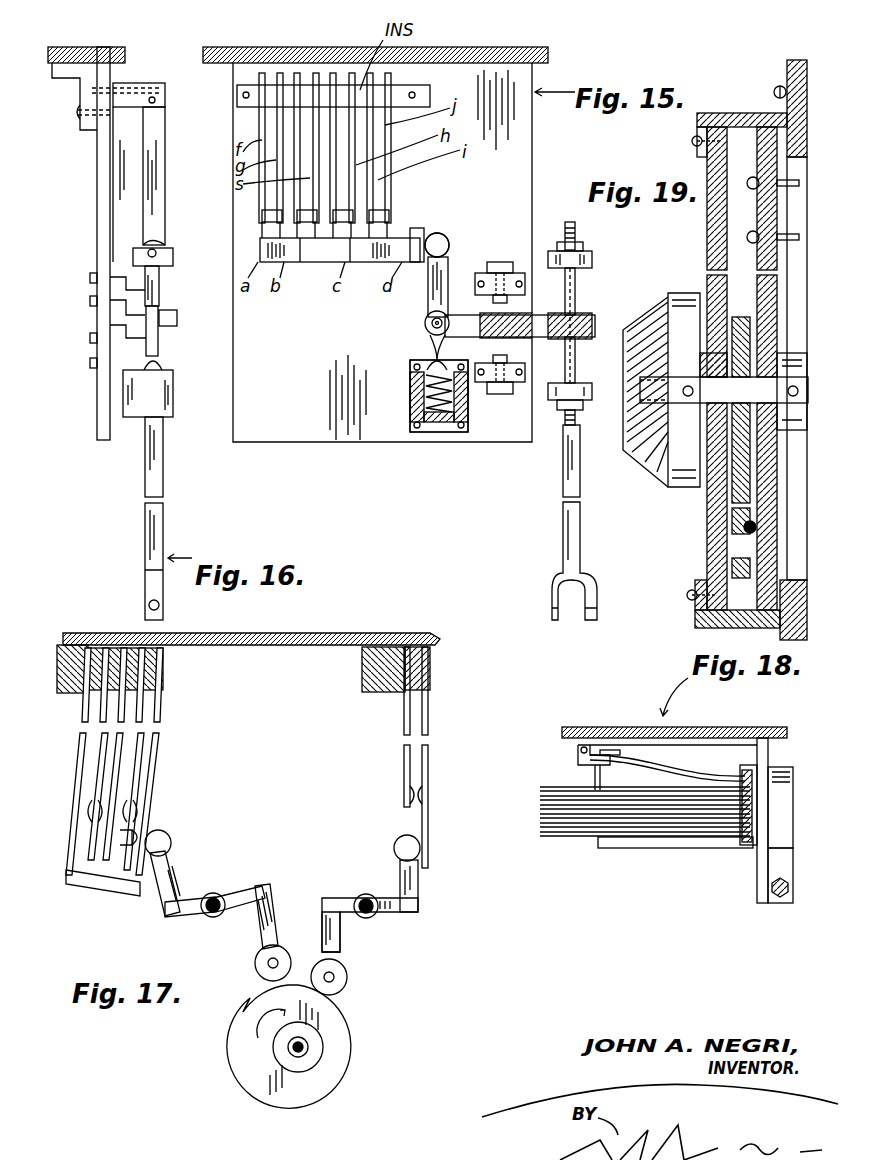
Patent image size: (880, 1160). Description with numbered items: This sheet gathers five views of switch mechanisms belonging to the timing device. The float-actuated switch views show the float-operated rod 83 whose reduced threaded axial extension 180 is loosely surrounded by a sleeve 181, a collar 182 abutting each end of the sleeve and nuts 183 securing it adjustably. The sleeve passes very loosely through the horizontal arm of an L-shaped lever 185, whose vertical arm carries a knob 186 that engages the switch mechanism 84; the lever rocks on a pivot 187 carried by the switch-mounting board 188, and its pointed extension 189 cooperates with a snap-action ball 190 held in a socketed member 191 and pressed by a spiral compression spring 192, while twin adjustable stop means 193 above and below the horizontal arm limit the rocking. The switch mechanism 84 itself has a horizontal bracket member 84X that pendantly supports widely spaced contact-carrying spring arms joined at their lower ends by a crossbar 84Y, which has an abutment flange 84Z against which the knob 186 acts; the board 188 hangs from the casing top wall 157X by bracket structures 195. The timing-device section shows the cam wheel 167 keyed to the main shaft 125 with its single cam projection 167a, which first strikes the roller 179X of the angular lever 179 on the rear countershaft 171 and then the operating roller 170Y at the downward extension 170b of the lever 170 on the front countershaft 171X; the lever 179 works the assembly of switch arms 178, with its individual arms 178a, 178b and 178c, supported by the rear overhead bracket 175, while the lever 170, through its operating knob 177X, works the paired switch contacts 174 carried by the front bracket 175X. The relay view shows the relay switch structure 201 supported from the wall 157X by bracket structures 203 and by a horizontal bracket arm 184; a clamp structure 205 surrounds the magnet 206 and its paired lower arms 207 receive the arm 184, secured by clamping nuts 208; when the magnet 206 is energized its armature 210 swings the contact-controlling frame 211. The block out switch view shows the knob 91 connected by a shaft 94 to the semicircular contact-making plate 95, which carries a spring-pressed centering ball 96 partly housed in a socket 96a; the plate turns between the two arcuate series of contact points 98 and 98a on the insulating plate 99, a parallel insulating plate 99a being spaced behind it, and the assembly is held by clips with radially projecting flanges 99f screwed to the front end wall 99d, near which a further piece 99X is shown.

In FIG. 16, the top wall 157X is at (115, 47).
In FIG. 17, the top wall 157X is at (358, 633).
In FIG. 18, the top wall 157X is at (760, 727).
In FIG. 16, the bracket structures 195 is at (72, 93).
In FIG. 16, the switch-mounting board 188 is at (103, 440).
In FIG. 15, the switch-mounting board 188 is at (340, 442).
In FIG. 16, the switch mechanism 84 is at (175, 190).
In FIG. 15, the switch mechanism 84 is at (427, 184).
In FIG. 16, the knob 186 is at (167, 244).
In FIG. 15, the knob 186 is at (449, 248).
In FIG. 16, the L-shaped lever 185 is at (174, 307).
In FIG. 15, the L-shaped lever 185 is at (422, 308).
In FIG. 16, the pointed extension 189 is at (160, 352).
In FIG. 15, the pointed extension 189 is at (443, 354).
In FIG. 16, the snap-action ball 190 is at (164, 368).
In FIG. 15, the snap-action ball 190 is at (425, 375).
In FIG. 16, the socketed member 191 is at (175, 400).
In FIG. 15, the socketed member 191 is at (455, 420).
In FIG. 16, the float-operated rod 83 is at (165, 496).
In FIG. 15, the float-operated rod 83 is at (563, 542).
In FIG. 15, the horizontal bracket member 84X is at (300, 85).
In FIG. 15, the crossbar 84Y is at (318, 272).
In FIG. 15, the abutment flange 84Z is at (430, 237).
In FIG. 15, the pivot 187 is at (425, 332).
In FIG. 15, the spiral compression spring 192 is at (425, 420).
In FIG. 15, the adjustable stop means 193 is at (499, 262).
In FIG. 15, the nuts 183 is at (562, 246).
In FIG. 15, the threaded axial extension 180 is at (577, 244).
In FIG. 15, the collar 182 is at (592, 259).
In FIG. 15, the sleeve 181 is at (577, 300).
In FIG. 19, the front end wall 99d is at (800, 60).
In FIG. 19, the radially projecting flanges 99f is at (780, 86).
In FIG. 19, the insulating plate 99 is at (757, 260).
In FIG. 19, the bracket piece 99X is at (697, 120).
In FIG. 19, the contact points 98 is at (748, 184).
In FIG. 19, the contact points 98a is at (748, 238).
In FIG. 19, the centering ball 96 is at (740, 548).
In FIG. 19, the socket 96a is at (745, 528).
In FIG. 19, the contact-making plate 95 is at (735, 482).
In FIG. 19, the knob 91 is at (662, 480).
In FIG. 19, the shaft 94 is at (632, 456).
In FIG. 19, the insulating plate 99a is at (700, 585).
In FIG. 17, the rear overhead bracket 175 is at (54, 660).
In FIG. 17, the front bracket 175X is at (365, 692).
In FIG. 17, the switch arms 178 is at (181, 722).
In FIG. 17, the contact finger 178a is at (104, 775).
In FIG. 17, the contact finger 178b is at (140, 780).
In FIG. 17, the insulating bar 178c is at (108, 855).
In FIG. 17, the switch contacts 174 is at (439, 725).
In FIG. 17, the operating knob 177X is at (396, 842).
In FIG. 17, the angular lever 179 is at (162, 920).
In FIG. 17, the rear countershaft 171 is at (216, 893).
In FIG. 17, the roller 179X is at (255, 962).
In FIG. 17, the lever 170 is at (407, 920).
In FIG. 17, the front countershaft 171X is at (363, 894).
In FIG. 17, the downward extension 170b is at (341, 936).
In FIG. 17, the operating roller 170Y is at (348, 982).
In FIG. 17, the cam wheel 167 is at (240, 1072).
In FIG. 17, the cam projection 167a is at (245, 1005).
In FIG. 17, the main shaft 125 is at (298, 1057).
In FIG. 18, the bracket structures 203 is at (780, 760).
In FIG. 18, the clamp structure 205 is at (792, 815).
In FIG. 18, the lower arms 207 is at (790, 868).
In FIG. 18, the bracket arm 184 is at (790, 888).
In FIG. 18, the clamping nuts 208 is at (772, 905).
In FIG. 18, the relay switch structure 201 is at (700, 866).
In FIG. 18, the magnet 206 is at (690, 780).
In FIG. 18, the armature 210 is at (580, 776).
In FIG. 18, the contact-controlling frame 211 is at (628, 755).